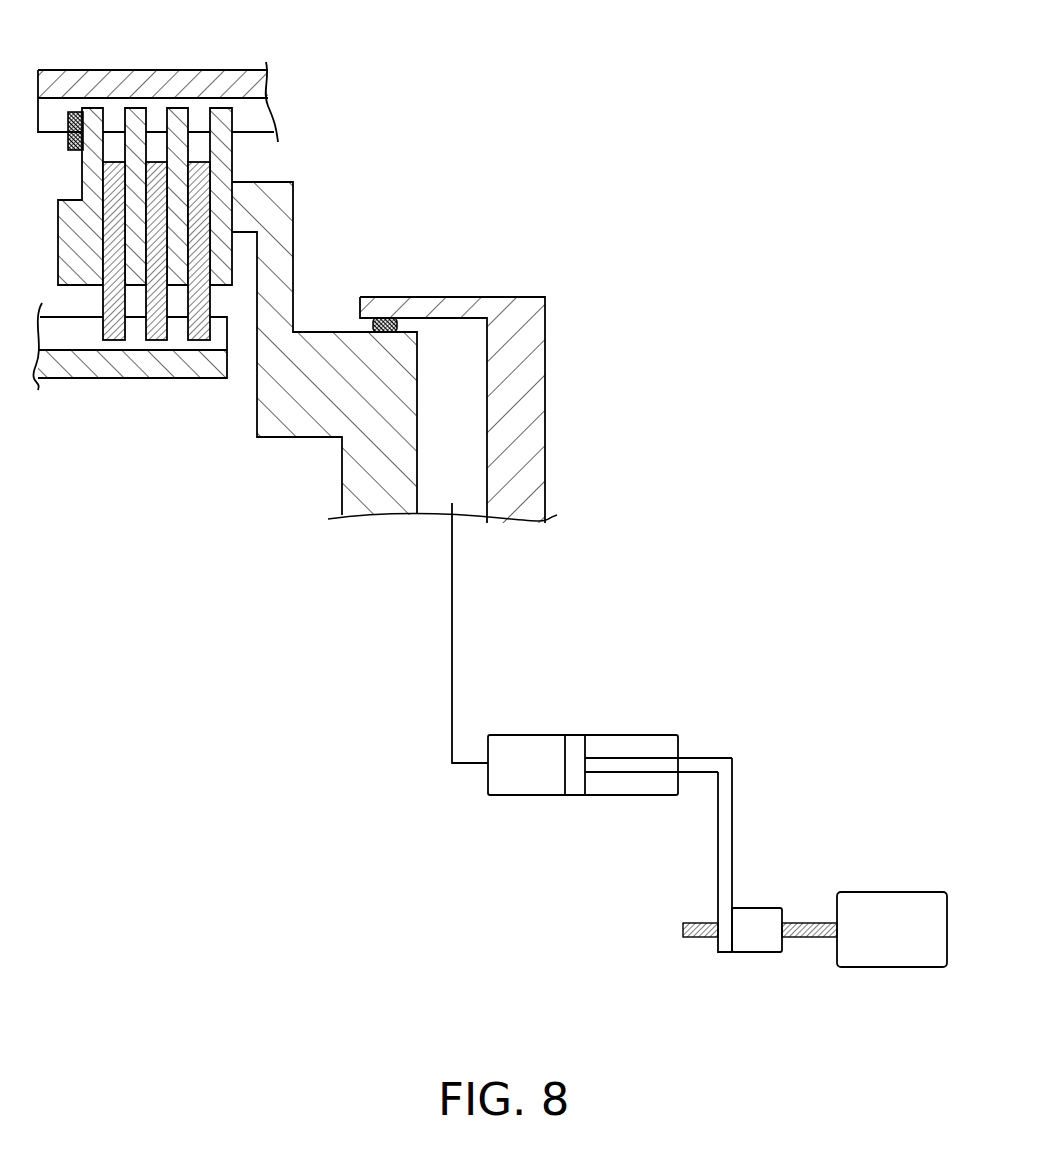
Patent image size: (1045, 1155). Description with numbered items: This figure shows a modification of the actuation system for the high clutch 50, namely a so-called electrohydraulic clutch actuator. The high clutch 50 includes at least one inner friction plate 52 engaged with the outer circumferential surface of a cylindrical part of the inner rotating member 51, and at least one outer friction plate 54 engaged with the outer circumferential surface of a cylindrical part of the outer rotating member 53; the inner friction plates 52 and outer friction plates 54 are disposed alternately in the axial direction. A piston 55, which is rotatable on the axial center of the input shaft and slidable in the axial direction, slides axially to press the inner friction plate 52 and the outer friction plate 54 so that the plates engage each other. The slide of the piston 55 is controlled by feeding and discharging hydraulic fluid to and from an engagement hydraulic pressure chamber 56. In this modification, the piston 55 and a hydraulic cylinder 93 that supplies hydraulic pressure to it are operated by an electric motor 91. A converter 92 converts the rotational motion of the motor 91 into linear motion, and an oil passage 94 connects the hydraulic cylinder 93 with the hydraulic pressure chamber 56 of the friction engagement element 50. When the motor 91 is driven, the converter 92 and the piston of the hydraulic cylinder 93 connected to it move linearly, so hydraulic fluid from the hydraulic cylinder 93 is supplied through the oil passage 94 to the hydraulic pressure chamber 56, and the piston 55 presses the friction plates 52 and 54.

The high clutch 50 is at (456, 106).
The inner rotating member 51 is at (70, 367).
The inner friction plate 52 is at (115, 346).
The outer rotating member 53 is at (244, 74).
The outer friction plate 54 is at (137, 108).
The piston 55 is at (290, 243).
The engagement hydraulic pressure chamber 56 is at (469, 431).
The electric motor 91 is at (905, 892).
The converter 92 is at (760, 908).
The hydraulic cylinder 93 is at (624, 735).
The oil passage 94 is at (450, 662).